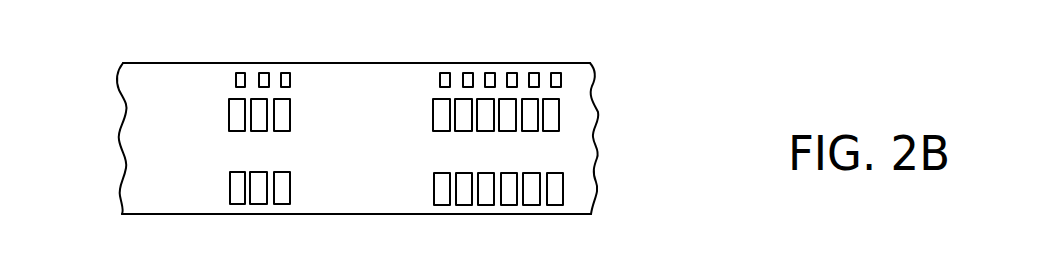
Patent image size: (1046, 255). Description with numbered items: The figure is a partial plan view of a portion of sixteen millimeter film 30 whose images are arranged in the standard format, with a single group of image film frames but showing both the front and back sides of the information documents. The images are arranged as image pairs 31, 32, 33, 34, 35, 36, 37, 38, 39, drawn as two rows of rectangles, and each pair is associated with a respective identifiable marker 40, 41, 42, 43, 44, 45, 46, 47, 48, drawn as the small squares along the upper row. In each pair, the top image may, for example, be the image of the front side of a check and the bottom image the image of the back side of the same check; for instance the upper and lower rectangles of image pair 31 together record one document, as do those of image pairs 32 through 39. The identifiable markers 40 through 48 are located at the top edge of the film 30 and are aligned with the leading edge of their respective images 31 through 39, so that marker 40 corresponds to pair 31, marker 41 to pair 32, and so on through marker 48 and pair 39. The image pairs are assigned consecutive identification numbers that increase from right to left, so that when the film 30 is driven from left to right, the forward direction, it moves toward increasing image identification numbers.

The film 30 is at (363, 202).
The image pair 31 is at (559, 116).
The image pair 32 is at (525, 131).
The image pair 33 is at (508, 173).
The image pair 34 is at (481, 131).
The image pair 35 is at (463, 173).
The image pair 36 is at (438, 131).
The image pair 37 is at (290, 187).
The image pair 38 is at (257, 131).
The image pair 39 is at (229, 184).
The identifiable marker 40 is at (556, 73).
The identifiable marker 41 is at (538, 73).
The identifiable marker 42 is at (512, 73).
The identifiable marker 43 is at (490, 73).
The identifiable marker 44 is at (467, 73).
The identifiable marker 45 is at (443, 73).
The identifiable marker 46 is at (283, 73).
The identifiable marker 47 is at (264, 73).
The identifiable marker 48 is at (238, 73).